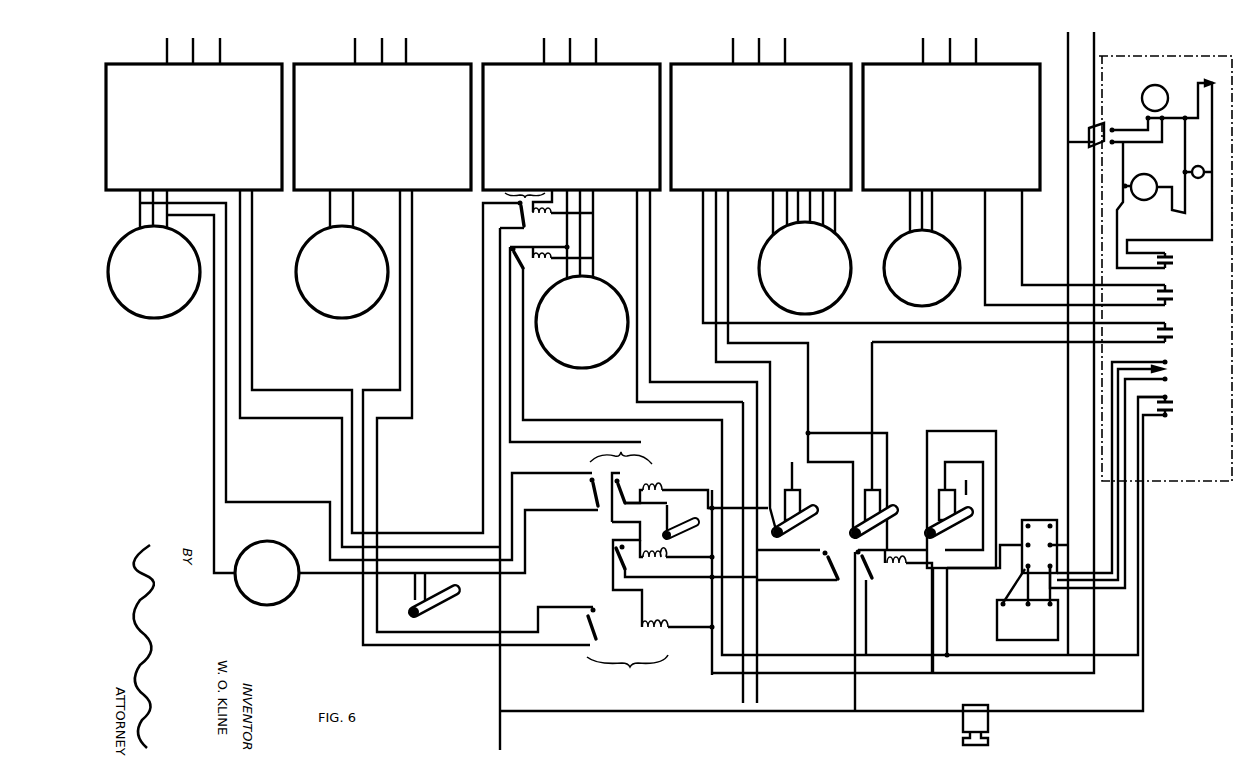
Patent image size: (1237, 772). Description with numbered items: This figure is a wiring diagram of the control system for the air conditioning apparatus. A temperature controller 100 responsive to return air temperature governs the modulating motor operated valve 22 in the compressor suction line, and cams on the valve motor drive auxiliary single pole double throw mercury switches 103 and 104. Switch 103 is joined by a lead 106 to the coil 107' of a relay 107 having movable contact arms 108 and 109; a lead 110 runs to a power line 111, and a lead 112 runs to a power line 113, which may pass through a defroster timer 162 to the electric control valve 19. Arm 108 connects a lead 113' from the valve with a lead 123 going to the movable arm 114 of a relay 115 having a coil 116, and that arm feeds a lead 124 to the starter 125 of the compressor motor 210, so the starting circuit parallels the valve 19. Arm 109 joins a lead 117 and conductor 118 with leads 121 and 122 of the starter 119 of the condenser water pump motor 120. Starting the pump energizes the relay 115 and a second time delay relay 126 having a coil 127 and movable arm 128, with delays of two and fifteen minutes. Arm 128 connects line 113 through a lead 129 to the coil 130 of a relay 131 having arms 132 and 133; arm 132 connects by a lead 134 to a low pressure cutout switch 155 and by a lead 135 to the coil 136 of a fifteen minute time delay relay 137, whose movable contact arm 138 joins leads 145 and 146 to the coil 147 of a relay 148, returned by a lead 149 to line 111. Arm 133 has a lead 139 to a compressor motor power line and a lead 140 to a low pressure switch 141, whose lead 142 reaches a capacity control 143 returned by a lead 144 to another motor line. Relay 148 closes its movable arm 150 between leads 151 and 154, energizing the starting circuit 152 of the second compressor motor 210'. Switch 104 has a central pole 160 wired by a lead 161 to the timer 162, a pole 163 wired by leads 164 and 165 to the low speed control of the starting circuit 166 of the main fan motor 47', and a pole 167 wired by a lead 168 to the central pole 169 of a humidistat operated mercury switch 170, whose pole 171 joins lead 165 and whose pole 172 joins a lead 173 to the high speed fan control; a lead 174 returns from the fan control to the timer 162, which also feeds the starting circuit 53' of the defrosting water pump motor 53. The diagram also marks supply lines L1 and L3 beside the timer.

The starter 125 is at (202, 137).
The starting circuit 152 is at (390, 137).
The starter 119 is at (583, 137).
The starting circuit 166 is at (763, 137).
The starting circuit 53' is at (951, 114).
The power line 113 is at (647, 382).
The power line 111 is at (220, 45).
The compressor motor 210 is at (154, 254).
The compressor motor 210' is at (342, 254).
The condenser water pump motor 120 is at (596, 331).
The main fan motor 47' is at (805, 252).
The defrosting water pump motor 53 is at (922, 248).
The capacity control 143 is at (282, 582).
The lead 139 is at (188, 201).
The lead 144 is at (201, 394).
The lead 123 is at (240, 213).
The lead 124 is at (246, 238).
The lead 142 is at (325, 574).
The lead 140 is at (545, 513).
The low pressure switch 141 is at (455, 591).
The lead 154 is at (548, 634).
The lead 151 is at (574, 603).
The movable arm 150 is at (597, 623).
The relay 148 is at (627, 664).
The movable arm 114 is at (514, 213).
The relay 115 is at (525, 184).
The coil 116 is at (552, 194).
The second relay 126 is at (523, 218).
The movable arm 128 is at (501, 255).
The coil 127 is at (551, 268).
The lead 129 is at (527, 379).
The lead 174 is at (700, 246).
The lead 173 is at (776, 393).
The lead 165 is at (810, 360).
The lead 161 is at (872, 388).
The lead 164 is at (887, 434).
The lead 122 is at (738, 511).
The pole 172 is at (776, 513).
The central pole 169 is at (790, 473).
The lead 168 is at (848, 474).
The pole 171 is at (814, 510).
The mercury switch 170 is at (805, 532).
The central pole 160 is at (876, 490).
The pole 163 is at (888, 496).
The pole 167 is at (854, 530).
The mercury switch 104 is at (926, 530).
The lead 112 is at (940, 431).
The lead 106 is at (948, 461).
The mercury switch 103 is at (960, 529).
The relay 131 is at (621, 481).
The movable arm 133 is at (590, 490).
The movable arm 132 is at (634, 491).
The coil 130 is at (656, 485).
The lead 134 is at (710, 508).
The low pressure cutout switch 155 is at (696, 530).
The lead 135 is at (612, 522).
The time delay relay 137 is at (603, 542).
The coil 136 is at (665, 550).
The movable contact arm 138 is at (613, 560).
The lead 146 is at (634, 592).
The lead 145 is at (667, 580).
The coil 147 is at (667, 626).
The lead 149 is at (670, 627).
The conductor 118 is at (724, 578).
The lead 121 is at (805, 558).
The lead 117 is at (810, 586).
The movable contact arm 109 is at (830, 562).
The movable contact arm 108 is at (872, 631).
The coil 107' is at (900, 610).
The relay 107 is at (880, 617).
The lead 113' is at (886, 621).
The lead 110 is at (932, 610).
The modulating motor operated valve 22 is at (1030, 520).
The temperature controller 100 is at (1040, 634).
The electric control valve 19 is at (963, 727).
The power line L1 is at (1068, 254).
The power line L3 is at (1096, 209).
The defroster timer 162 is at (1215, 276).